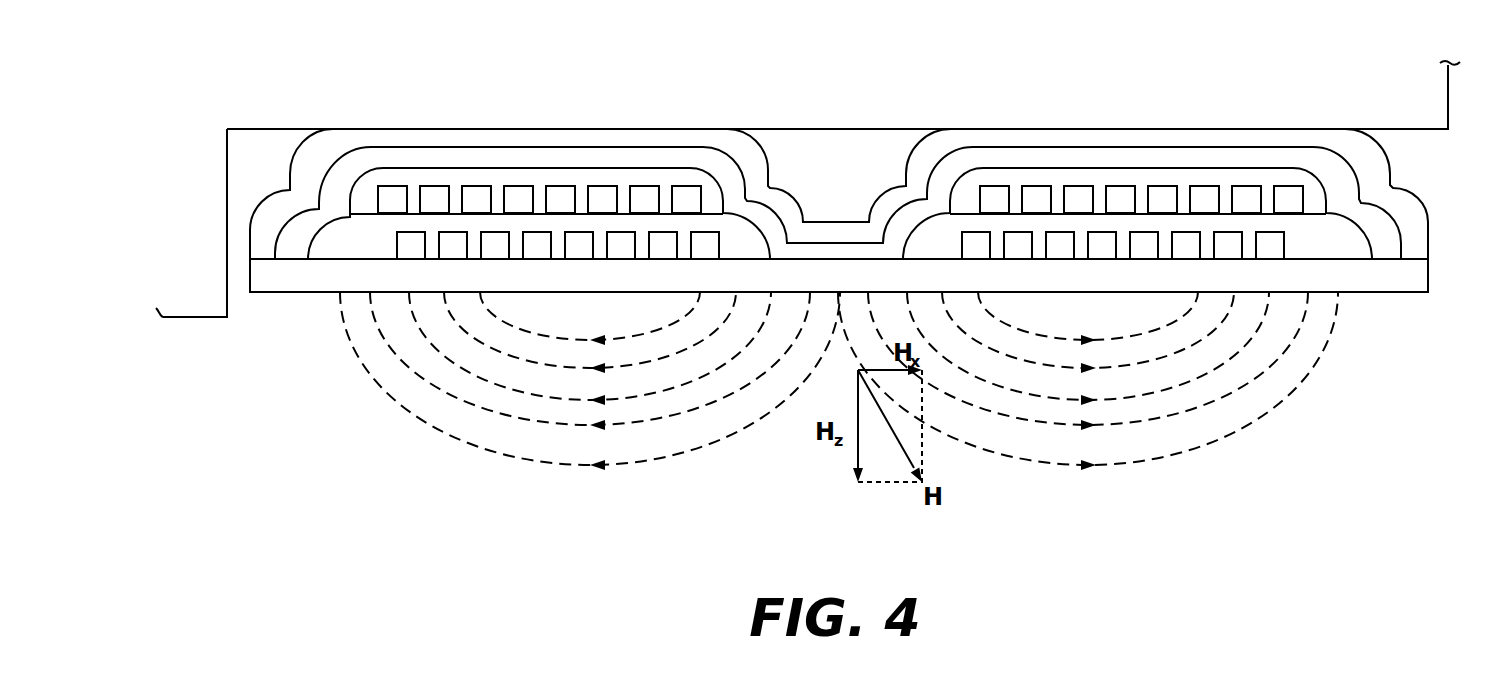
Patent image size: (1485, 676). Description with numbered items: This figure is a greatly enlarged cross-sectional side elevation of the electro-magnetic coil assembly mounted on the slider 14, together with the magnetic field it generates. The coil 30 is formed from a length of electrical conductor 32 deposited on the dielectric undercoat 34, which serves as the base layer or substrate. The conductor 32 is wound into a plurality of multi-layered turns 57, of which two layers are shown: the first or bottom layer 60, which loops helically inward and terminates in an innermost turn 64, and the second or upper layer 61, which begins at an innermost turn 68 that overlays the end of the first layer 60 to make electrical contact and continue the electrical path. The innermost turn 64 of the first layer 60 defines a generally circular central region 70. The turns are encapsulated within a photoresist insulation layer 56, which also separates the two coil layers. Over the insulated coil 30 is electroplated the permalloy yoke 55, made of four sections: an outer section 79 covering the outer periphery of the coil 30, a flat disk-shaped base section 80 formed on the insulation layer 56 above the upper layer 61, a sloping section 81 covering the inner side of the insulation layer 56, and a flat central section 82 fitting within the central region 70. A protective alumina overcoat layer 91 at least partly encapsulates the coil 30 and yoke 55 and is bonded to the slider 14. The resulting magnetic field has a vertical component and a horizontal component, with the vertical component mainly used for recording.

The slider 14 is at (236, 129).
The coil 30 is at (1108, 150).
The electrical conductor 32 is at (1037, 197).
The undercoat 34 is at (1400, 273).
The yoke 55 is at (410, 131).
The insulation layer 56 is at (368, 185).
The multi-layered turns 57 is at (388, 204).
The first layer 60 is at (1301, 250).
The second layer 61 is at (1318, 197).
The innermost turn 64 is at (710, 244).
The innermost turn 68 is at (985, 200).
The central region 70 is at (813, 262).
The outer section 79 is at (332, 197).
The base section 80 is at (507, 157).
The sloping section 81 is at (755, 173).
The central section 82 is at (852, 232).
The overcoat layer 91 is at (463, 141).